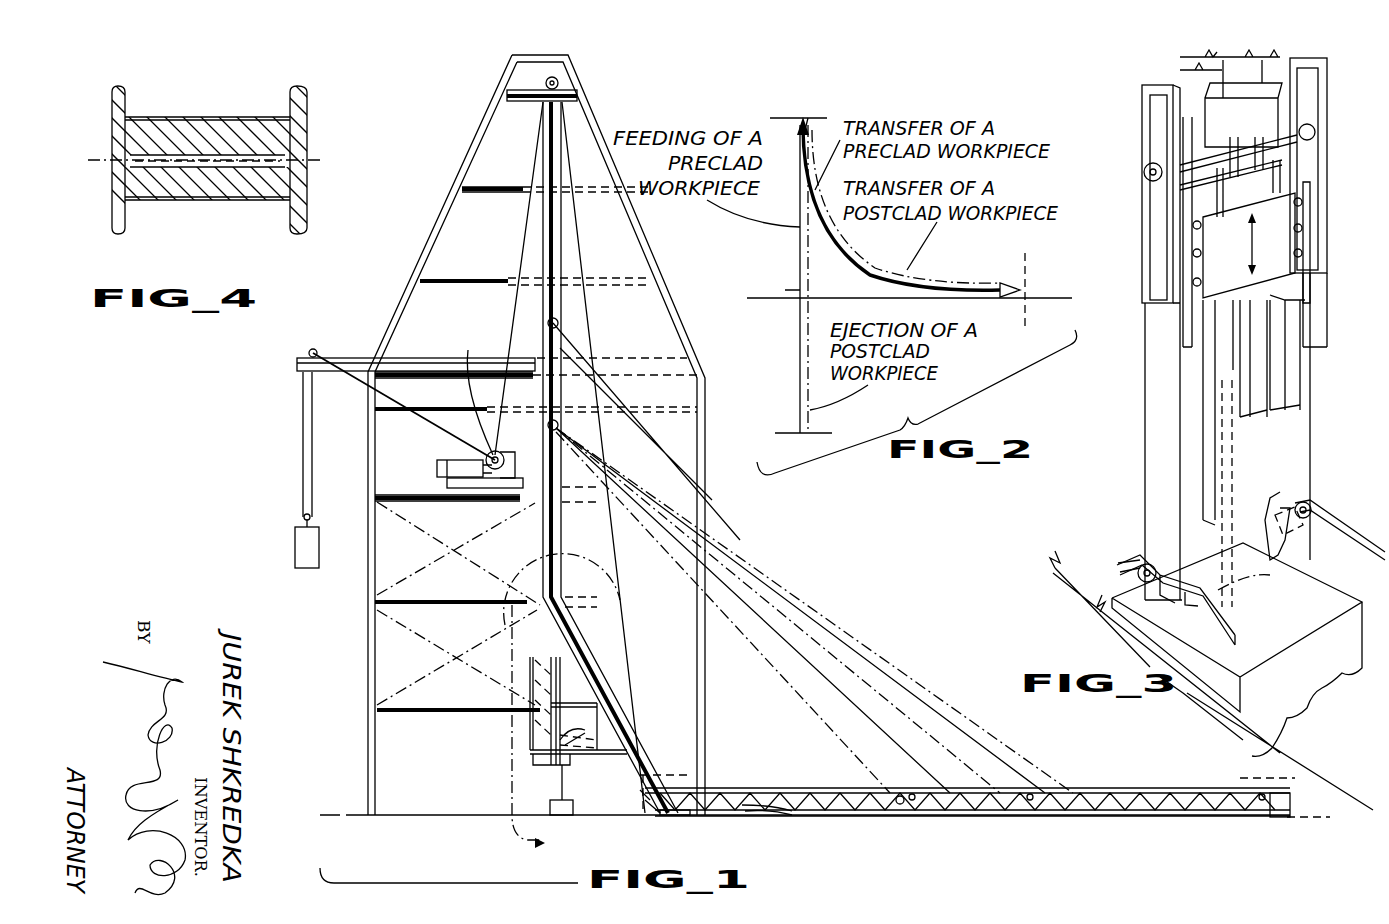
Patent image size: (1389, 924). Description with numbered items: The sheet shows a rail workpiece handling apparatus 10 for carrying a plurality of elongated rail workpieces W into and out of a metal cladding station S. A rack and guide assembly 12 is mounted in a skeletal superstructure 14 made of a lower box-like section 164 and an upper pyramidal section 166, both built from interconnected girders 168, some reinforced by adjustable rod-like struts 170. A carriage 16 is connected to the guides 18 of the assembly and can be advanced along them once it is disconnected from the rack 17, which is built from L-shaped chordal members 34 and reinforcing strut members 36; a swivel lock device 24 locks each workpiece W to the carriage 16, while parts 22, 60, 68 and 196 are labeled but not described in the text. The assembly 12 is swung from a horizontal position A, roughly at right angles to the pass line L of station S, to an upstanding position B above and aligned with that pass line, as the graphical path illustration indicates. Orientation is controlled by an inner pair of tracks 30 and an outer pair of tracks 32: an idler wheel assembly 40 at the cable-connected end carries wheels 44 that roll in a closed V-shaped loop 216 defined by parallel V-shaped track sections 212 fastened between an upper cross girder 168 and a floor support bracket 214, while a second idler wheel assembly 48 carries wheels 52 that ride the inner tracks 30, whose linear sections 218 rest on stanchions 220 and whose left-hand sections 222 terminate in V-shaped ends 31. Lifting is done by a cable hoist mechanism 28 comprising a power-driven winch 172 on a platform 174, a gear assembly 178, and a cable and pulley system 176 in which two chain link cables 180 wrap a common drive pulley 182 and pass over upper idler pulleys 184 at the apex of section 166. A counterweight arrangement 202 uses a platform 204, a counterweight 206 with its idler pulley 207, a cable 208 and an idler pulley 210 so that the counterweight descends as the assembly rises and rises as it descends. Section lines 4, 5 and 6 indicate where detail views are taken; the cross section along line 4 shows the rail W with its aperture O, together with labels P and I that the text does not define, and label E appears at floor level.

In FIG. 1, the workpiece handling and production apparatus 10 is at (396, 255).
In FIG. 3, the workpiece handling and production apparatus 10 is at (1120, 365).
In FIG. 1, the rack and guide assembly 12 is at (805, 605).
In FIG. 3, the rack and guide assembly 12 is at (1338, 165).
In FIG. 1, the superstructure 14 is at (393, 328).
In FIG. 3, the carriage 16 is at (1249, 217).
In FIG. 3, the rack 17 is at (1160, 243).
In FIG. 3, the guides 18 is at (1305, 208).
In FIG. 1, the conveyor 22 is at (1110, 815).
In FIG. 3, the swivel lock device 24 is at (1290, 288).
In FIG. 1, the cable hoist mechanism 28 is at (457, 347).
In FIG. 3, the cable hoist mechanism 28 is at (1293, 125).
In FIG. 1, the inner pair of tracks 30 is at (812, 812).
In FIG. 3, the inner pair of tracks 30 is at (1218, 621).
In FIG. 3, the V-shaped ends 31 is at (1135, 570).
In FIG. 1, the outer pair of tracks 32 is at (596, 652).
In FIG. 3, the outer pair of tracks 32 is at (1148, 205).
In FIG. 1, the L-shaped chordal members 34 is at (817, 785).
In FIG. 1, the reinforcing strut members 36 is at (1010, 812).
In FIG. 3, the idler wheel assembly 40 is at (1198, 165).
In FIG. 1, the wheels 44 is at (560, 320).
In FIG. 3, the wheels 44 is at (1145, 168).
In FIG. 3, the second idler wheel assembly 48 is at (1145, 568).
In FIG. 1, the wheels 52 is at (910, 790).
In FIG. 3, the wheels 52 is at (1150, 563).
In FIG. 3, the clamp bracket 60 is at (1205, 285).
In FIG. 3, the clamp roller 68 is at (1204, 228).
In FIG. 1, the lower box-like section 164 is at (381, 558).
In FIG. 1, the upper pyramidal-like section 166 is at (483, 138).
In FIG. 1, the girders 168 is at (523, 90).
In FIG. 1, the adjustable rod-like struts 170 is at (450, 550).
In FIG. 1, the power driven winch 172 is at (445, 465).
In FIG. 1, the platform 174 is at (486, 501).
In FIG. 1, the cable and pulley system 176 is at (454, 388).
In FIG. 1, the gear assembly 178 is at (490, 450).
In FIG. 1, the chain link cables 180 is at (528, 222).
In FIG. 3, the chain link cables 180 is at (1238, 73).
In FIG. 1, the common drive pulley 182 is at (472, 338).
In FIG. 1, the upper idler pulleys 184 is at (560, 83).
In FIG. 3, the lower cross beam 196 is at (1180, 190).
In FIG. 1, the counterweight arrangement 202 is at (297, 366).
In FIG. 1, the platform 204 is at (347, 365).
In FIG. 1, the counterweight 206 is at (305, 545).
In FIG. 1, the idler pulley 207 is at (305, 515).
In FIG. 1, the cable 208 is at (303, 394).
In FIG. 1, the idler pulley 210 is at (281, 336).
In FIG. 1, the track sections 212 is at (550, 618).
In FIG. 1, the floor support bracket 214 is at (665, 814).
In FIG. 1, the closed V-shaped loop 216 is at (555, 538).
In FIG. 1, the linear sections 218 is at (900, 812).
In FIG. 1, the stanchions 220 is at (572, 812).
In FIG. 1, the left-hand section 222 is at (580, 748).
In FIG. 3, the section line 4— 4 is at (1235, 470).
In FIG. 1, the section line 5 is at (655, 848).
In FIG. 1, the section line 6 is at (630, 787).
In FIG. 4, the plate P is at (231, 158).
In FIG. 4, the aperture O is at (228, 145).
In FIG. 4, the inner layer I is at (270, 175).
In FIG. 3, the rail workpiece W is at (1265, 390).
In FIG. 4, the rail workpiece W is at (300, 130).
In FIG. 1, the metal cladding zone S is at (557, 800).
In FIG. 2, the metal cladding zone S is at (787, 290).
In FIG. 3, the metal cladding zone S is at (1237, 649).
In FIG. 2, the horizontal position A is at (1025, 312).
In FIG. 2, the upstanding position B is at (780, 115).
In FIG. 3, the pass line L is at (1248, 575).
In FIG. 1, the ejection station E is at (455, 818).